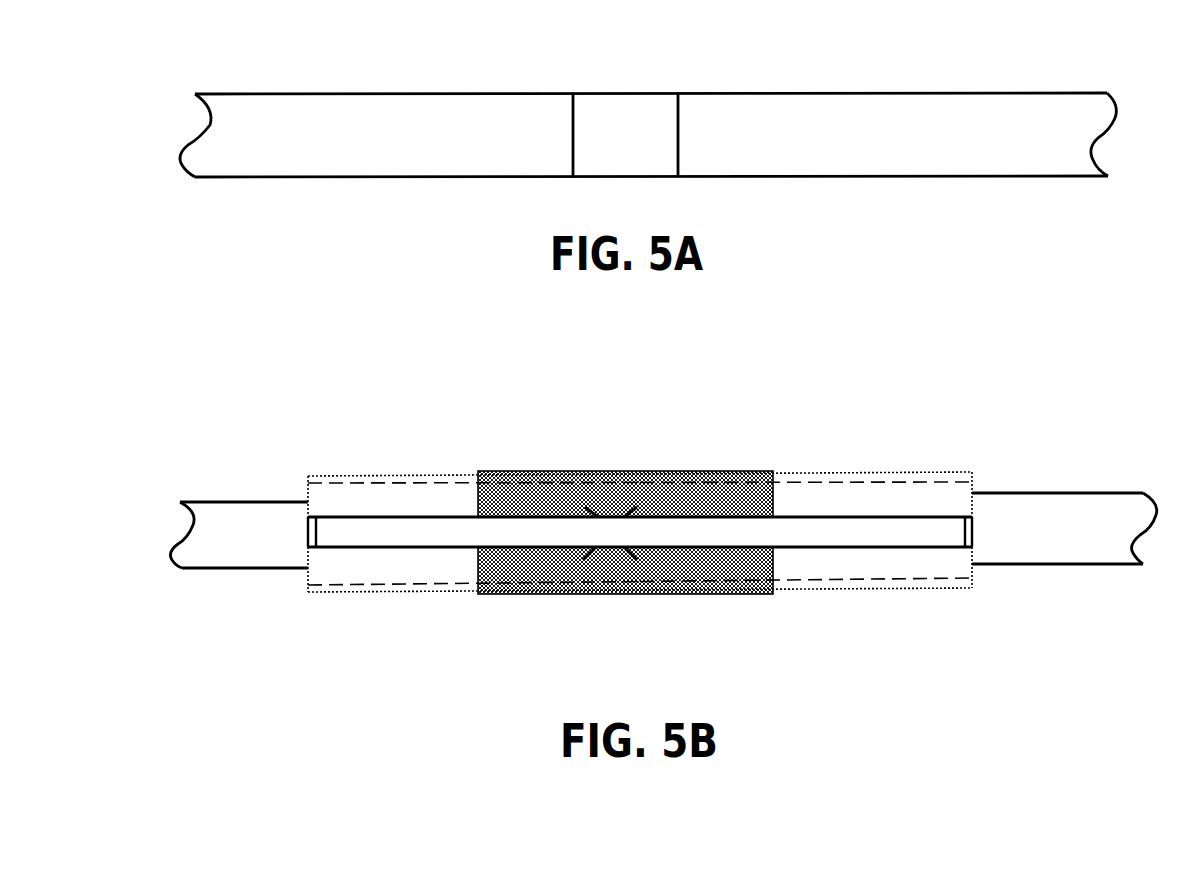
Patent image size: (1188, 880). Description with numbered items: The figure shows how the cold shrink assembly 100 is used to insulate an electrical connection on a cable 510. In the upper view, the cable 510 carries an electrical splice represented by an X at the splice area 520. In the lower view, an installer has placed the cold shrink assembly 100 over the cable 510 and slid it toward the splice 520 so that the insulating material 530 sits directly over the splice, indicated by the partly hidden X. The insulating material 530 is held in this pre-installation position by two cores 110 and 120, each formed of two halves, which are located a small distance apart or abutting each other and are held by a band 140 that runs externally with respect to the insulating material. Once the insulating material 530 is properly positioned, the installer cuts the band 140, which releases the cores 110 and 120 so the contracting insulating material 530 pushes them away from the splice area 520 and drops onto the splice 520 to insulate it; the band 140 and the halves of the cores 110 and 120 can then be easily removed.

In FIG. 5B, the cold shrink assembly 100 is at (245, 362).
In FIG. 5B, the core 110 is at (432, 500).
In FIG. 5B, the core 120 is at (873, 495).
In FIG. 5B, the band 140 is at (868, 533).
In FIG. 5A, the cable 510 is at (267, 133).
In FIG. 5B, the cable 510 is at (235, 515).
In FIG. 5A, the splice 520 is at (652, 115).
In FIG. 5B, the splice 520 is at (610, 557).
In FIG. 5B, the insulating material 530 is at (662, 487).